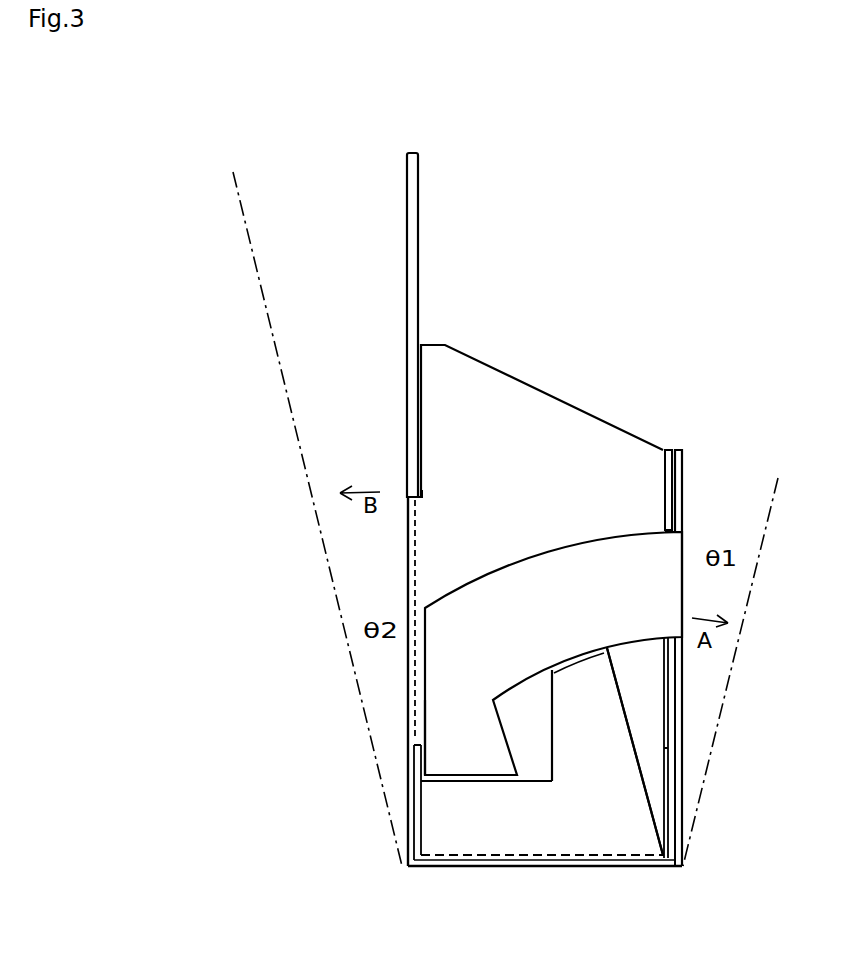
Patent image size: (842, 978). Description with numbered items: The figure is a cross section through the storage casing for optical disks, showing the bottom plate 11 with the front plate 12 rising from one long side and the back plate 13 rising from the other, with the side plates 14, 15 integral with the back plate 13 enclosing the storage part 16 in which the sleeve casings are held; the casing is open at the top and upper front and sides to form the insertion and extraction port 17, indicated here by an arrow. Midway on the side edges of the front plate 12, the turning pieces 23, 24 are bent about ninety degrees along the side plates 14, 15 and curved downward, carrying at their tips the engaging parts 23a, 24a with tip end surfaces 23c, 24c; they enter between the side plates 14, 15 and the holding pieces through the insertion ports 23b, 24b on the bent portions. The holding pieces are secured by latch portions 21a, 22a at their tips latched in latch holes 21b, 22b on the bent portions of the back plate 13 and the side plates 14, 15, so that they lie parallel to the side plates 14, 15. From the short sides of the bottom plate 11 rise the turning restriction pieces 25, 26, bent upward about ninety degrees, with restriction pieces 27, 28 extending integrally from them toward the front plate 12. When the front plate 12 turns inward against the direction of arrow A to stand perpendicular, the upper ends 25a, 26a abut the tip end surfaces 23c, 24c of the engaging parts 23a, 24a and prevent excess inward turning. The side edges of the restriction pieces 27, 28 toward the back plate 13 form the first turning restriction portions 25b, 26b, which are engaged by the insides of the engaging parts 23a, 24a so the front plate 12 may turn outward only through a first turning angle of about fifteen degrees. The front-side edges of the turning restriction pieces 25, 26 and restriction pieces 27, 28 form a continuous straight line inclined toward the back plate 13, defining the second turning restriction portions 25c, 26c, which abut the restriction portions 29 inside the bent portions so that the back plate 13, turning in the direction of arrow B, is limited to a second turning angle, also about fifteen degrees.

The bottom plate 11 is at (610, 870).
The front plate 12 is at (680, 487).
The back plate 13 is at (407, 178).
The side plate 14 is at (542, 421).
The side plate 15 is at (543, 402).
The storage part 16 is at (605, 462).
The insertion and extraction port 17 is at (665, 293).
The latch portion 21a is at (371, 681).
The latch portion 22a is at (410, 523).
The latch hole 21b is at (363, 458).
The latch hole 22b is at (408, 493).
The turning piece 23 is at (553, 639).
The turning piece 24 is at (517, 565).
The engaging part 23a is at (341, 742).
The engaging part 24a is at (440, 743).
The insertion port 23b is at (628, 508).
The insertion port 24b is at (663, 528).
The tip end surface 23c is at (471, 746).
The tip end surface 24c is at (465, 772).
The turning restriction piece 25 is at (541, 783).
The turning restriction piece 26 is at (485, 848).
The upper end 25a is at (513, 806).
The upper end 26a is at (522, 774).
The first turning restriction portion 25b is at (592, 717).
The first turning restriction portion 26b is at (551, 747).
The second turning restriction portion 25c is at (610, 751).
The second turning restriction portion 26c is at (610, 751).
The restriction piece 27 is at (706, 751).
The restriction piece 28 is at (607, 727).
The restriction portion 29 is at (663, 777).